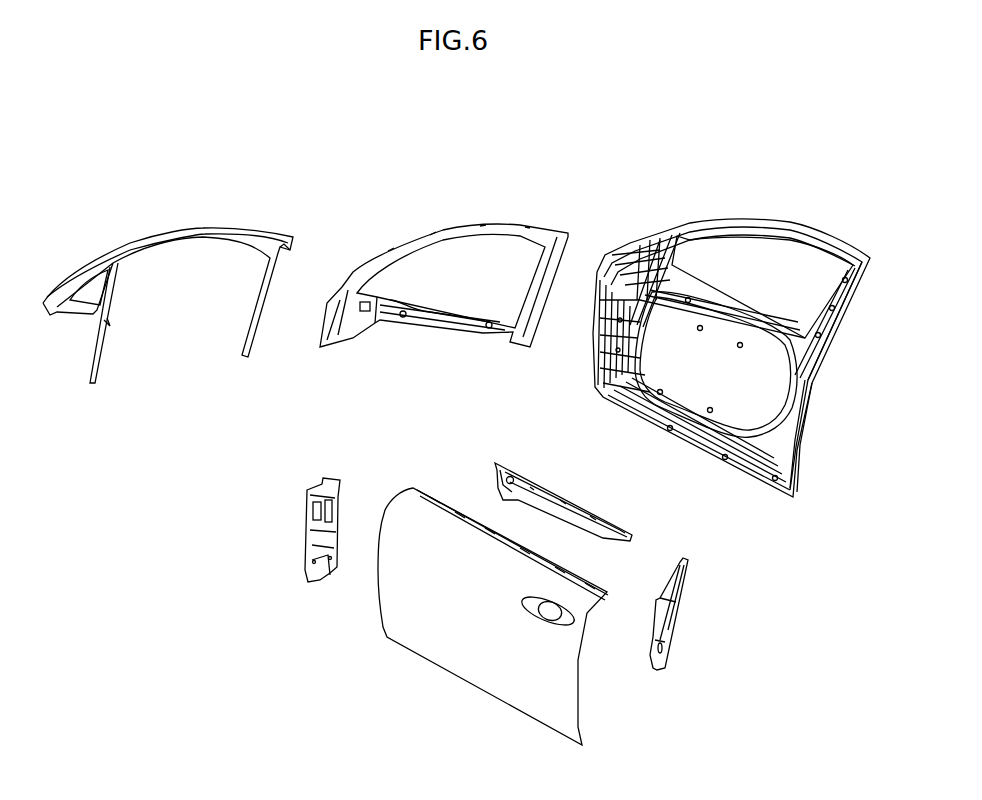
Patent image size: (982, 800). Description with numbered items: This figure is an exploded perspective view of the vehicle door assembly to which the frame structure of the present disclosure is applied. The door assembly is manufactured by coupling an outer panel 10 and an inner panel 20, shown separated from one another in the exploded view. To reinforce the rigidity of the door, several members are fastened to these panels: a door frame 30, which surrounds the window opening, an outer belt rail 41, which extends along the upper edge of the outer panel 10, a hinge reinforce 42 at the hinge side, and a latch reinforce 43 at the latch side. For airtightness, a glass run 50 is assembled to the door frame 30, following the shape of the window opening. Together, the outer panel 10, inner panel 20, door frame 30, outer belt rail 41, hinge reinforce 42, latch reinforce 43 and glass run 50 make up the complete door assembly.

The outer panel 10 is at (478, 663).
The inner panel 20 is at (797, 455).
The door frame 30 is at (522, 217).
The outer belt rail 41 is at (542, 482).
The hinge reinforce 42 is at (303, 535).
The latch reinforce 43 is at (670, 617).
The glass run 50 is at (207, 228).